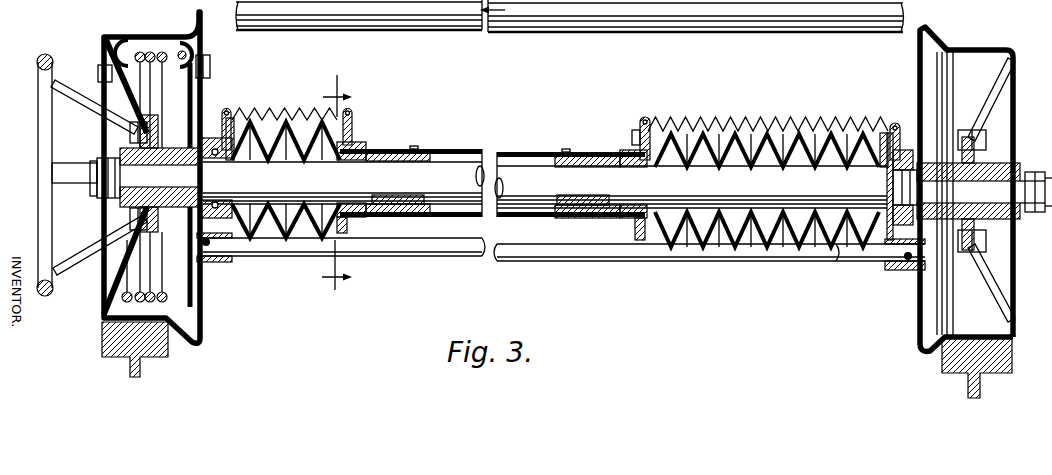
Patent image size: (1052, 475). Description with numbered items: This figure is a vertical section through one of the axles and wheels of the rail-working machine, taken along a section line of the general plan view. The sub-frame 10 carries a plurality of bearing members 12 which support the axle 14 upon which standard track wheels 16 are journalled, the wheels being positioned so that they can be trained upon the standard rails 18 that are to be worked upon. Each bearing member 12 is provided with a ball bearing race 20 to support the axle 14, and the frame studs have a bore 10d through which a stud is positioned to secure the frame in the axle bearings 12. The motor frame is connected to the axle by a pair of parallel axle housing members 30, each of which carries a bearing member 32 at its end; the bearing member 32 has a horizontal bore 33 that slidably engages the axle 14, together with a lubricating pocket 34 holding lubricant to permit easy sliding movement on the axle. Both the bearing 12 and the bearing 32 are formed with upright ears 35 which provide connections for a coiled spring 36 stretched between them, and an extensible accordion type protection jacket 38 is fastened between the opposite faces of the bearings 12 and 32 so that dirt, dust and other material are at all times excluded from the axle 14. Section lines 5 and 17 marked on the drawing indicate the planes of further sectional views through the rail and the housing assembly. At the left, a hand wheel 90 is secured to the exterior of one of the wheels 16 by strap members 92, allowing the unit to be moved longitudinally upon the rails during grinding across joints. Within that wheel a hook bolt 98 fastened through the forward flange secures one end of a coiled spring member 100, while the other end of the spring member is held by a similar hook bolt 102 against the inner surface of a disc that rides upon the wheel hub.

The section line 5- 5 is at (500, 10).
The sub-frame 10 is at (656, 262).
The bore 10d is at (216, 262).
The bearing member 12 is at (226, 257).
The axle 14 is at (536, 190).
The track wheel 16 is at (142, 35).
The section line 17- 17 is at (330, 182).
The rail 18 is at (166, 353).
The ball bearing race 20 is at (262, 113).
The axle housing member 30 is at (448, 150).
The bearing member 32 is at (390, 150).
The horizontal bore 33 is at (385, 215).
The lubricating pocket 34 is at (366, 142).
The upright ear 35 is at (228, 110).
The coiled spring 36 is at (305, 106).
The accordion type protection jacket 38 is at (298, 240).
The hand wheel 90 is at (45, 54).
The strap member 92 is at (86, 100).
The hook bolt 98 is at (108, 60).
The coiled spring member 100 is at (128, 40).
The hook bolt 102 is at (206, 60).